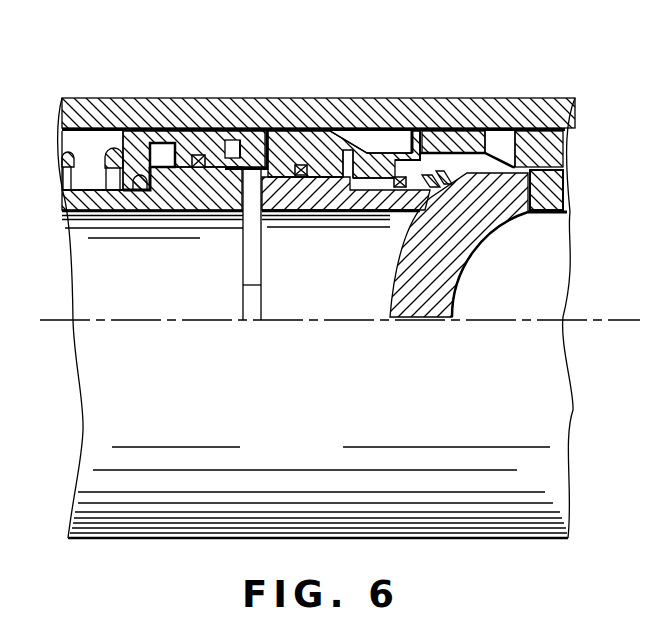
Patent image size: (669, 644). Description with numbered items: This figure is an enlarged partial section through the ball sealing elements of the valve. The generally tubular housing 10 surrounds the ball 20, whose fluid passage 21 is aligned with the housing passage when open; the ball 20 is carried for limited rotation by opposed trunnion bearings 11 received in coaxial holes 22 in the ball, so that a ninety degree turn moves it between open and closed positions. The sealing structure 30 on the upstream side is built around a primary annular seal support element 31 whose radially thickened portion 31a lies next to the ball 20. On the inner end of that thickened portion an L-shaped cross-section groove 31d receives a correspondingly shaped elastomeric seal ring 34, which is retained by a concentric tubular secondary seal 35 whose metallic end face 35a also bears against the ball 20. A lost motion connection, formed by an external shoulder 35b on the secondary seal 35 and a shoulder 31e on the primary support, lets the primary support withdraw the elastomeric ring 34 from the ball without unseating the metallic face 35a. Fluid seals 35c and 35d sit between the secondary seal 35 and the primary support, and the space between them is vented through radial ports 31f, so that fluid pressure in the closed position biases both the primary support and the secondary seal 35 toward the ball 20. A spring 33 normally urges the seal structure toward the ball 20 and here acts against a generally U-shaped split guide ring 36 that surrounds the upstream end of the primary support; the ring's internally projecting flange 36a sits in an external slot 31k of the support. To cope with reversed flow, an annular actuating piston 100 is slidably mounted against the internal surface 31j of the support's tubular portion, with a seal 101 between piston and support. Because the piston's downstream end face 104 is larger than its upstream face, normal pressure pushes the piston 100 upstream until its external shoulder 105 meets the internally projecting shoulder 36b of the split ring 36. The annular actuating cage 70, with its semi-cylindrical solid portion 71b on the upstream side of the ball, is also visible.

The tubular housing 10 is at (78, 98).
The trunnion bearings 11 is at (562, 190).
The ball 20 is at (388, 299).
The ball fluid passage 21 is at (457, 288).
The coaxial holes 22 is at (533, 218).
The sealing structure 30 is at (344, 232).
The primary annular seal support element 31 is at (345, 128).
The radially thickened portion 31a is at (298, 147).
The L-shaped cross-section groove 31d is at (412, 140).
The shoulder 31e is at (353, 160).
The radial ports 31f is at (348, 157).
The internal surface of tubular portion 31j is at (232, 185).
The external slot 31k is at (264, 135).
The spring 33 is at (62, 145).
The elastomeric seal ring 34 is at (433, 160).
The tubular secondary seal 35 is at (310, 205).
The metallic end face 35a is at (442, 205).
The external shoulder 35b is at (355, 190).
The fluid seal 35c is at (298, 177).
The fluid seal 35d is at (397, 176).
The split guide ring 36 is at (138, 153).
The internally projecting flange 36a is at (250, 145).
The internally projecting shoulder 36b is at (163, 157).
The annular actuating cage 70 is at (500, 122).
The semi-cylindrical solid portion 71b is at (454, 133).
The annular actuating piston 100 is at (77, 216).
The seal 101 is at (198, 195).
The downstream end face 104 is at (243, 285).
The external shoulder 105 is at (137, 200).